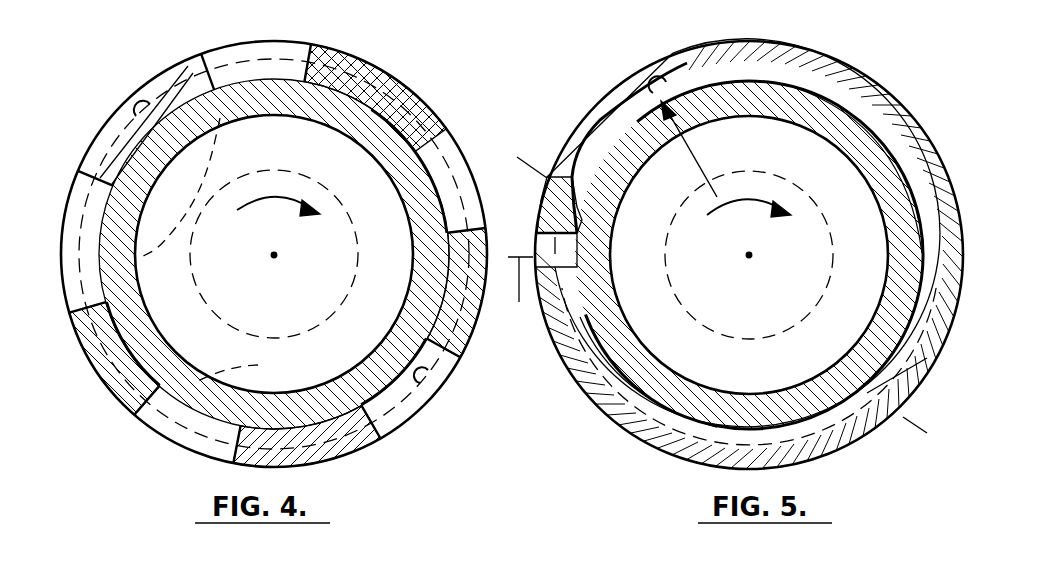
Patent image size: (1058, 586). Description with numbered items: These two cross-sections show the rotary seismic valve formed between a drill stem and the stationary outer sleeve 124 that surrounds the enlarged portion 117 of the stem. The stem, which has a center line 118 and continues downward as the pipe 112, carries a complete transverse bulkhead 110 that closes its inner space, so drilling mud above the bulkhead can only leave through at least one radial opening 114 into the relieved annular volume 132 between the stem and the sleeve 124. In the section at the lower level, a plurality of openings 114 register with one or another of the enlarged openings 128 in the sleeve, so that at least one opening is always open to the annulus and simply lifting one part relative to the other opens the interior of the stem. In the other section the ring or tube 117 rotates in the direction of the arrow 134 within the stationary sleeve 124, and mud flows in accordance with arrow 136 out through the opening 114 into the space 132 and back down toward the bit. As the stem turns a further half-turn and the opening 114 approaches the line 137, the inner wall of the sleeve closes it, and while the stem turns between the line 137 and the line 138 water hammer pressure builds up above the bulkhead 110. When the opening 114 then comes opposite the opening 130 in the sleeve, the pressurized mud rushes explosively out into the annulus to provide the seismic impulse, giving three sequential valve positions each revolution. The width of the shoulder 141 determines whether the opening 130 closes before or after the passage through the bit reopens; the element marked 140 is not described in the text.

In FIG. 4, the bulkhead closure 110 is at (396, 287).
In FIG. 5, the bulkhead closure 110 is at (709, 288).
In FIG. 4, the pipe 112 is at (337, 310).
In FIG. 5, the pipe 112 is at (820, 305).
In FIG. 4, the radial opening 114 is at (207, 176).
In FIG. 5, the radial opening 114 is at (673, 132).
In FIG. 4, the enlarged portion of the drill stem 117 is at (262, 112).
In FIG. 5, the enlarged portion of the drill stem 117 is at (745, 115).
In FIG. 4, the center line 118 is at (272, 258).
In FIG. 5, the center line 118 is at (749, 259).
In FIG. 4, the sleeve 124 is at (447, 127).
In FIG. 5, the sleeve 124 is at (607, 97).
In FIG. 4, the enlarged openings in the sleeve 128 is at (283, 50).
In FIG. 5, the opening in the sleeve 130 is at (537, 238).
In FIG. 4, the relieved annular volume 132 is at (248, 56).
In FIG. 5, the relieved annular volume 132 is at (758, 52).
In FIG. 4, the arrow indicating rotation direction 134 is at (157, 100).
In FIG. 5, the arrow indicating rotation direction 134 is at (663, 84).
In FIG. 5, the arrow indicating mud flow 136 is at (692, 152).
In FIG. 5, the line 137 is at (913, 423).
In FIG. 5, the line 138 is at (513, 294).
In FIG. 5, the anchor wedge 140 is at (547, 177).
In FIG. 5, the shoulder 141 is at (587, 222).